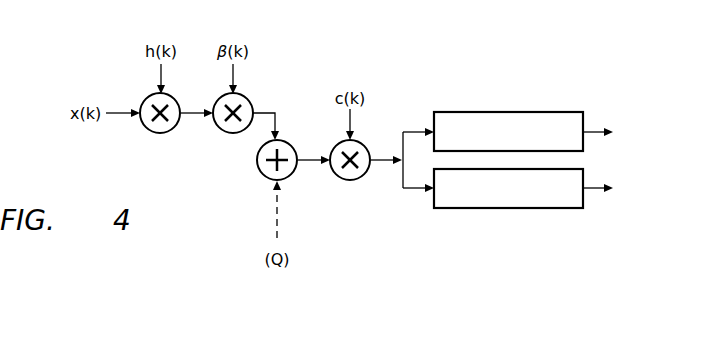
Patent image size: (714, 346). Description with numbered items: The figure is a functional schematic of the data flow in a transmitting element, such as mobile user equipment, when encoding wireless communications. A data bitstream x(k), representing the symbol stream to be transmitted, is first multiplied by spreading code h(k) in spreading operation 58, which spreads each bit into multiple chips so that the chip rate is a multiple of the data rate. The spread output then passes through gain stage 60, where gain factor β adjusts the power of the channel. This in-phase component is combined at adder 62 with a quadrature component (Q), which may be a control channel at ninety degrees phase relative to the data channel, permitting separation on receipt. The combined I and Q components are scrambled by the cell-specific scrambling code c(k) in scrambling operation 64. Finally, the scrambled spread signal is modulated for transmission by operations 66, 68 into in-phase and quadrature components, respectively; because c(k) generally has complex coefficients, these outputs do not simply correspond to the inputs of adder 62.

The spreading operation 58 is at (158, 134).
The gain stage 60 is at (251, 101).
The adder 62 is at (262, 176).
The scrambling operation 64 is at (352, 181).
The in-phase modulation operation 66 is at (508, 112).
The quadrature modulation operation 68 is at (508, 208).